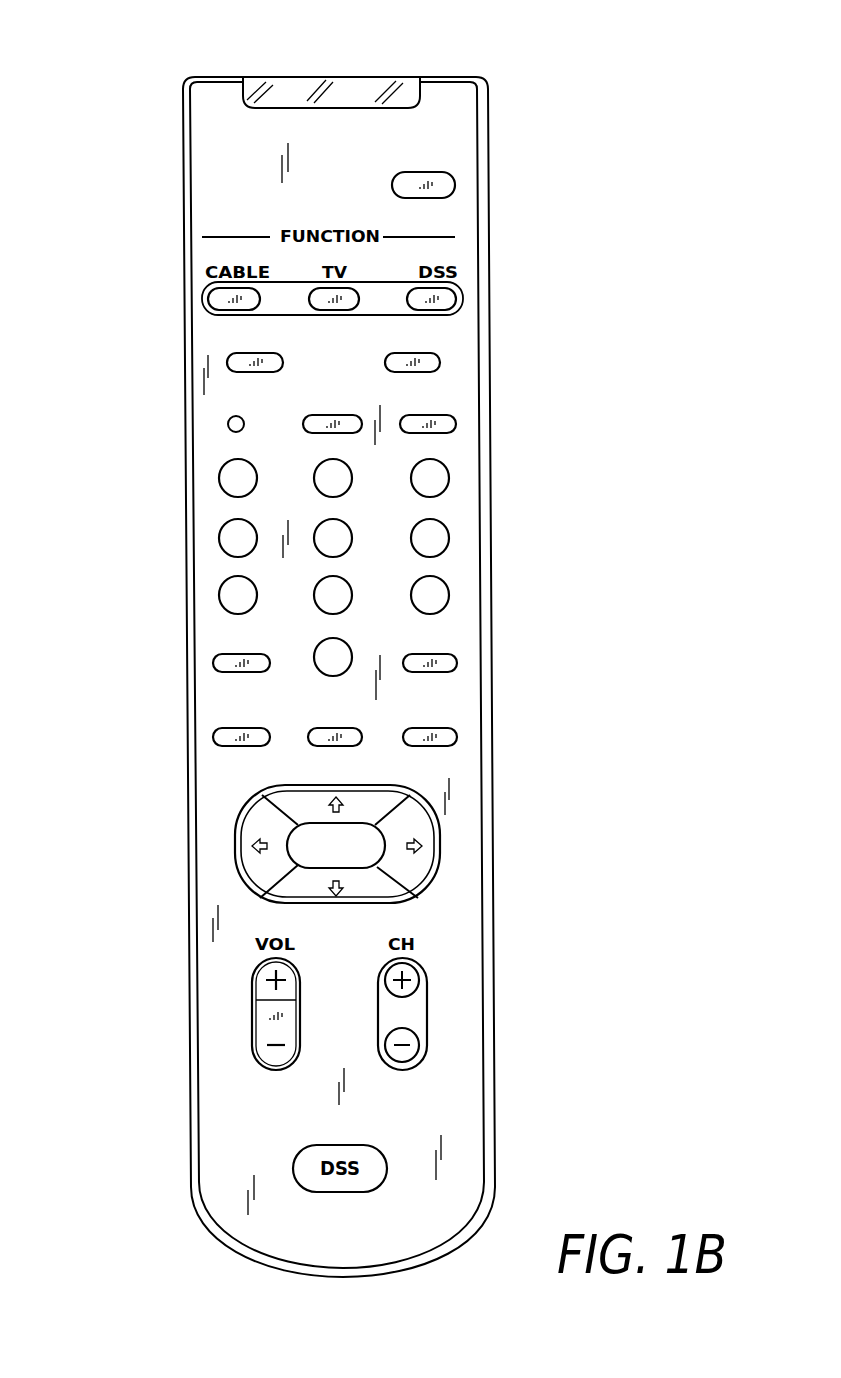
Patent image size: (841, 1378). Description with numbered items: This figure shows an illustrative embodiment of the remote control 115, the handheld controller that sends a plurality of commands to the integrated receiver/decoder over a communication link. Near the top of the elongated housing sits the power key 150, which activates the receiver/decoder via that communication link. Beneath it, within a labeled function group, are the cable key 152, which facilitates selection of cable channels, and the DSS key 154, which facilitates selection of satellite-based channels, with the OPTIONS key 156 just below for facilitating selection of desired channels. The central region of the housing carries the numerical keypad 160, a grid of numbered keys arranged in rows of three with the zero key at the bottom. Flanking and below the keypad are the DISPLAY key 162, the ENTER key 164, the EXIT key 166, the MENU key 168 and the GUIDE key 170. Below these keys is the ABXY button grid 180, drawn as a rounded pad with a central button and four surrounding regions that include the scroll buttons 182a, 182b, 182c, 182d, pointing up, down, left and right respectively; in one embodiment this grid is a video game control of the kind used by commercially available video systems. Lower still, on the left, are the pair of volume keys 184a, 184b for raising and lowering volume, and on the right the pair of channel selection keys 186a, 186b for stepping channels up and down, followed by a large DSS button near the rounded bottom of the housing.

The remote control 115 is at (603, 75).
The power key 150 is at (457, 182).
The cable key 152 is at (210, 298).
The DSS key 154 is at (457, 297).
The OPTIONS key 156 is at (441, 361).
The numerical keypad 160 is at (455, 505).
The DISPLAY key 162 is at (214, 663).
The ENTER key 164 is at (458, 663).
The EXIT key 166 is at (214, 737).
The MENU key 168 is at (342, 748).
The GUIDE key 170 is at (458, 737).
The ABXY button grid 180 is at (332, 853).
The scroll button 182a is at (310, 797).
The scroll button 182b is at (372, 893).
The scroll button 182c is at (248, 860).
The scroll button 182d is at (428, 852).
The volume key 184a is at (255, 973).
The volume key 184b is at (255, 1044).
The channel selection key 186a is at (420, 975).
The channel selection key 186b is at (420, 1040).